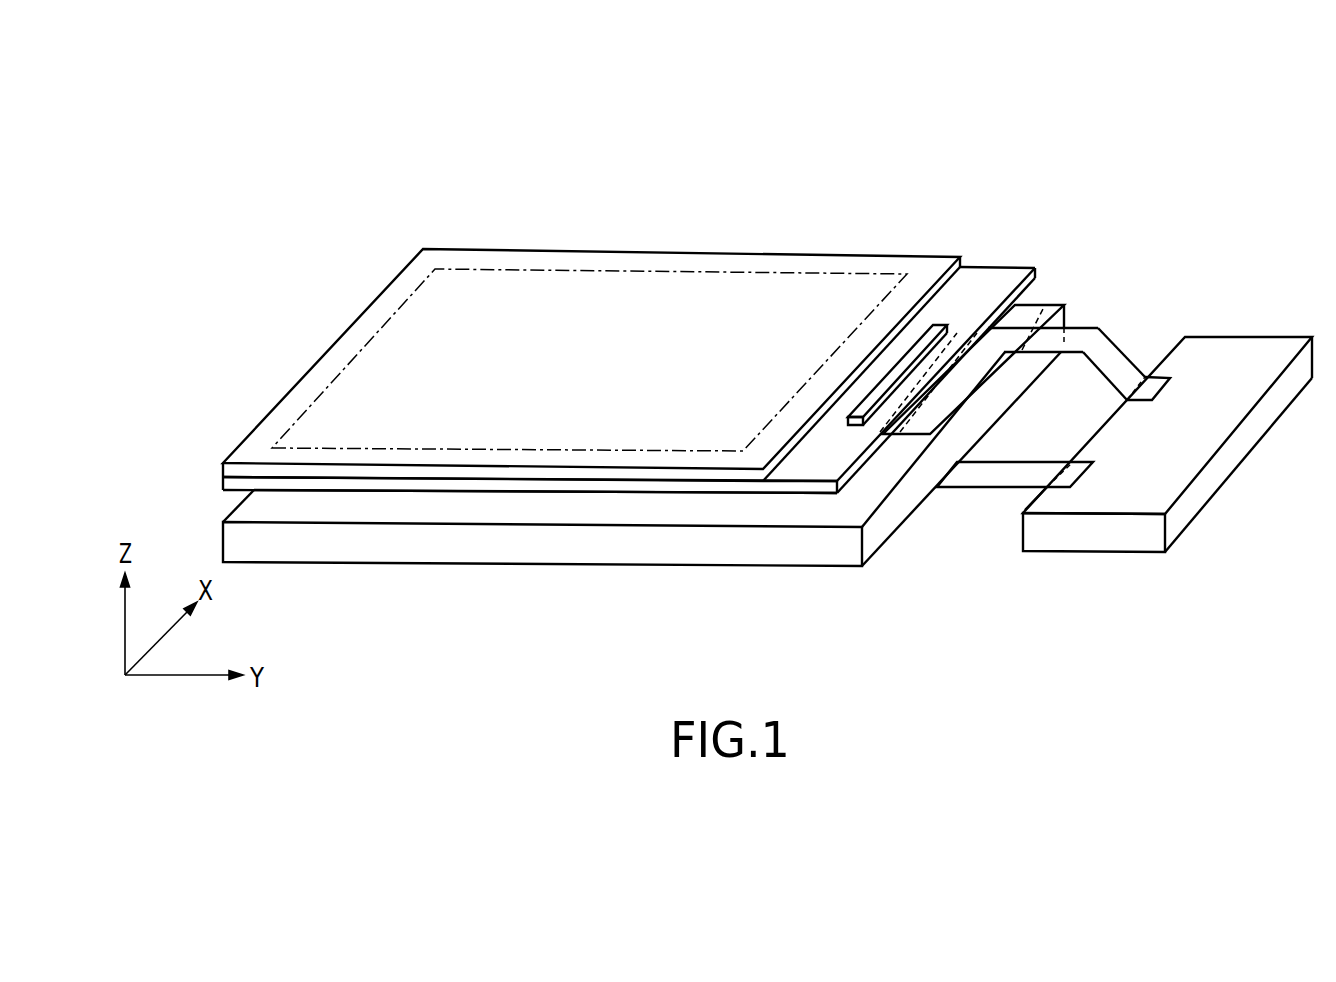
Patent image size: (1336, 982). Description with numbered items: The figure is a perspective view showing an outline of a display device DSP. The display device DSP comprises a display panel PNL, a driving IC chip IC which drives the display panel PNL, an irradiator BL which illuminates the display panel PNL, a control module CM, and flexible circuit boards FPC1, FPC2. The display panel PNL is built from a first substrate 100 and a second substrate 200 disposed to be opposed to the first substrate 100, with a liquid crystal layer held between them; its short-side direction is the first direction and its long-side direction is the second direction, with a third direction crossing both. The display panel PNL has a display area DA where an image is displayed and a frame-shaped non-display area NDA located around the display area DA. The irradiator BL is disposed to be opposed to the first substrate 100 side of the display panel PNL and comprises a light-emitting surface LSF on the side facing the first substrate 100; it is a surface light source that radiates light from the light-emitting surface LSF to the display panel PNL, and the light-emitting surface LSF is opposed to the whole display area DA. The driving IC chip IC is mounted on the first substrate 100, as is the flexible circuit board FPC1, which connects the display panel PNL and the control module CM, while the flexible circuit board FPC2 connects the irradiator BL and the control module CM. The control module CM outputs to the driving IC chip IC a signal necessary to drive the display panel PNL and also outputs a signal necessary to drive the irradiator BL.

The display device DSP is at (292, 212).
The display panel PNL is at (212, 470).
The second substrate 200 is at (938, 253).
The first substrate 100 is at (1000, 267).
The display area DA is at (622, 272).
The non-display area NDA is at (681, 262).
The driving IC chip IC is at (855, 426).
The flexible circuit board FPC1 is at (1095, 327).
The flexible circuit board FPC2 is at (977, 489).
The control module CM is at (1235, 337).
The irradiator BL is at (782, 565).
The light-emitting surface LSF is at (383, 500).